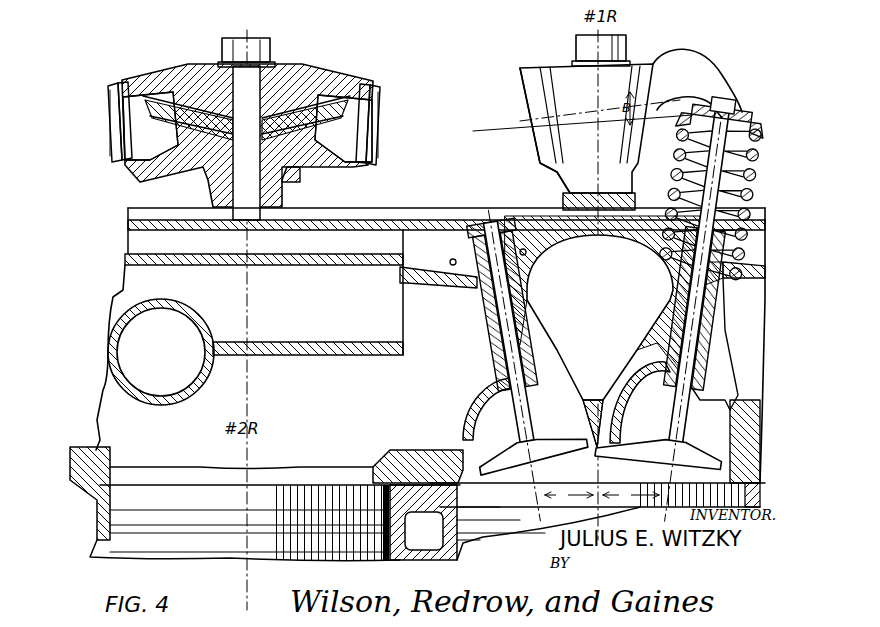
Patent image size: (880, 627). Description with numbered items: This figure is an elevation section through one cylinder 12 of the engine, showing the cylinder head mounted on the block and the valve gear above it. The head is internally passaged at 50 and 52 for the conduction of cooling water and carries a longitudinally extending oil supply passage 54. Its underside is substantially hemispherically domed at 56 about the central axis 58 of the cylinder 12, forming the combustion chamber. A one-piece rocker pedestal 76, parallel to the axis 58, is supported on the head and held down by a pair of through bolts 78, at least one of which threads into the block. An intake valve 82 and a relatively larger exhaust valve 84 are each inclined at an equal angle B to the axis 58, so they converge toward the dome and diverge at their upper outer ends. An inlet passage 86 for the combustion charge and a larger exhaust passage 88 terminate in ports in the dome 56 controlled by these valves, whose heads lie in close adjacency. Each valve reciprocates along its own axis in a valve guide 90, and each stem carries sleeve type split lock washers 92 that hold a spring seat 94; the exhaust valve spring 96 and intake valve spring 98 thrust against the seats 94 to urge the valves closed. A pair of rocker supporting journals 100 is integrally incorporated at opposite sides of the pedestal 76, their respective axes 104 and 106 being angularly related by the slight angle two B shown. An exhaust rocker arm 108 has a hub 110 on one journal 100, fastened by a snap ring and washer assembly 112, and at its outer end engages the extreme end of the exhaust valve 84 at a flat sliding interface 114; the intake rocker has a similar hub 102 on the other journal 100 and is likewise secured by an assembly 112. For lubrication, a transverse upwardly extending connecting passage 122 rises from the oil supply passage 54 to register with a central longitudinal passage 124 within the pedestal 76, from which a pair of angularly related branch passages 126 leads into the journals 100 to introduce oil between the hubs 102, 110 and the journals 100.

The cylinder 12 is at (102, 538).
The internal cooling water passage 50 is at (140, 278).
The internal cooling water passage 52 is at (590, 282).
The oil supply passage 54 is at (132, 240).
The hemispherical dome 56 is at (367, 467).
The central axis 58 is at (597, 469).
The rocker pedestal 76 is at (283, 63).
The head hold down bolt 78 is at (262, 21).
The intake valve 82 is at (484, 222).
The exhaust valve 84 is at (707, 323).
The inlet passage 86 is at (192, 370).
The exhaust passage 88 is at (725, 402).
The valve guide 90 is at (520, 338).
The sleeve type split lock washer 92 is at (740, 127).
The spring seat 94 is at (710, 112).
The exhaust valve spring 96 is at (760, 166).
The intake valve spring 98 is at (453, 259).
The rocker supporting journal 100 is at (134, 98).
The hub of intake rocker arm 102 is at (340, 182).
The journal axis 104 is at (658, 97).
The journal axis 106 is at (353, 122).
The exhaust rocker arm 108 is at (717, 62).
The hub of exhaust rocker arm 110 is at (130, 80).
The snap ring and washer assembly 112 is at (370, 97).
The interface of contact 114 is at (733, 115).
The connecting passage 122 is at (238, 216).
The central longitudinal passage 124 is at (244, 95).
The branch passage 126 is at (175, 93).